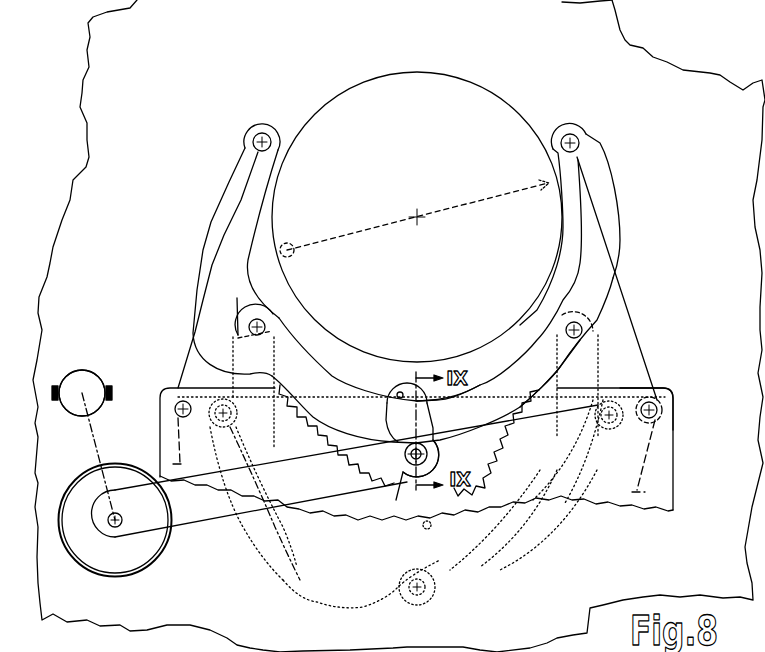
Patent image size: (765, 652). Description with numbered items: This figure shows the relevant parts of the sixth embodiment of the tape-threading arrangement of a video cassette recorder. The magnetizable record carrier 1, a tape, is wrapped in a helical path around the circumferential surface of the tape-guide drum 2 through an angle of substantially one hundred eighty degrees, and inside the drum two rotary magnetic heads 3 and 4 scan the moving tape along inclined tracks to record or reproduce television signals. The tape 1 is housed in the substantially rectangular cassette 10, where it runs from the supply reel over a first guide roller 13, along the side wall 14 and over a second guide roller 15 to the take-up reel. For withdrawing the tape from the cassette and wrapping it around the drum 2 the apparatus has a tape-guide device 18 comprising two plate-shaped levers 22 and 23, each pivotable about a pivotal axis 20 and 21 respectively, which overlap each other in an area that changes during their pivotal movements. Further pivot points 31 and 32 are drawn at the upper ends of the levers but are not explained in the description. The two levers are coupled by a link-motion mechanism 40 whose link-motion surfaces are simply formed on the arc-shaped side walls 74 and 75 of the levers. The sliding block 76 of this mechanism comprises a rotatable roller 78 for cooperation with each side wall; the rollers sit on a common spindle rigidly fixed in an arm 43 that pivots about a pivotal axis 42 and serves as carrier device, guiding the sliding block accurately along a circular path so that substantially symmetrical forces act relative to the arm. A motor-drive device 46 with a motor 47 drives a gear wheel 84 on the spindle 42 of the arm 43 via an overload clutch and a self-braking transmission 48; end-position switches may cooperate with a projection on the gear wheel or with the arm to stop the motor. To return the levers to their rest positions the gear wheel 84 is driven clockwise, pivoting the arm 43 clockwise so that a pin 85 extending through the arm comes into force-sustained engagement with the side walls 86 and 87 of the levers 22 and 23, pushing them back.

The magnetizable record carrier 1 is at (625, 296).
The tape-guide drum 2 is at (370, 70).
The rotary magnetic head 3 is at (284, 243).
The rotary magnetic head 4 is at (546, 190).
The cassette 10 is at (678, 472).
The first guide roller 13 is at (175, 409).
The side wall 14 is at (640, 387).
The second guide roller 15 is at (658, 410).
The tape-guide device 18 is at (574, 376).
The pivotal axis 20 is at (583, 329).
The pivotal axis 21 is at (259, 318).
The plate-shaped lever 22 is at (204, 268).
The plate-shaped lever 23 is at (617, 238).
The left upper pivot 31 is at (262, 132).
The right upper pivot 32 is at (570, 133).
The link-motion mechanism 40 is at (445, 448).
The pivotal axis 42 is at (115, 527).
The arm 43 is at (187, 528).
The motor-drive device 46 is at (74, 362).
The motor 47 is at (93, 382).
The self-braking transmission 48 is at (97, 463).
The side wall 74 is at (298, 418).
The side wall 75 is at (505, 440).
The sliding block 76 is at (401, 457).
The rotatable roller 78 is at (411, 466).
The gear wheel 84 is at (72, 527).
The pin 85 is at (401, 390).
The side wall 86 is at (302, 347).
The side wall 87 is at (570, 288).